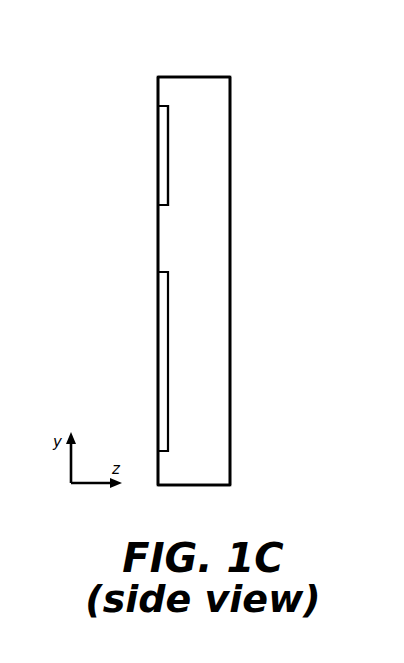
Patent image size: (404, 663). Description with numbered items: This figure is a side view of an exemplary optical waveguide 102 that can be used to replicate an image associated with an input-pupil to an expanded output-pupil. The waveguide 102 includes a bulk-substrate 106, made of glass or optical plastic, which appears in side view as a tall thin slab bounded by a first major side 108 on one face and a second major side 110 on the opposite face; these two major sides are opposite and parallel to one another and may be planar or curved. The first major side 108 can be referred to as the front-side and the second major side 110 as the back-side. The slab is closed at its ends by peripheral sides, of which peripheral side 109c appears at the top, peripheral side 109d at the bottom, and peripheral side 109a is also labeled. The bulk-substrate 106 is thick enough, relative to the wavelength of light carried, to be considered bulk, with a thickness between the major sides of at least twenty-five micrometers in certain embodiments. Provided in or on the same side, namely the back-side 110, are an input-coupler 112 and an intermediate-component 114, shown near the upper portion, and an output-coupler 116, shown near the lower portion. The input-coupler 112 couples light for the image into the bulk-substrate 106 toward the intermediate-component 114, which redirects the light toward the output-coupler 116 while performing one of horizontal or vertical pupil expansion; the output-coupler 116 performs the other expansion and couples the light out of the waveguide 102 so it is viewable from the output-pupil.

The optical waveguide 102 is at (294, 137).
The bulk-substrate 106 is at (179, 252).
The first major side 108 is at (233, 97).
The peripheral side 109a is at (8, 206).
The peripheral side 109c is at (193, 77).
The peripheral side 109d is at (202, 486).
The second major side 110 is at (157, 84).
The input-coupler 112 is at (157, 158).
The intermediate-component 114 is at (163, 155).
The output-coupler 116 is at (157, 360).